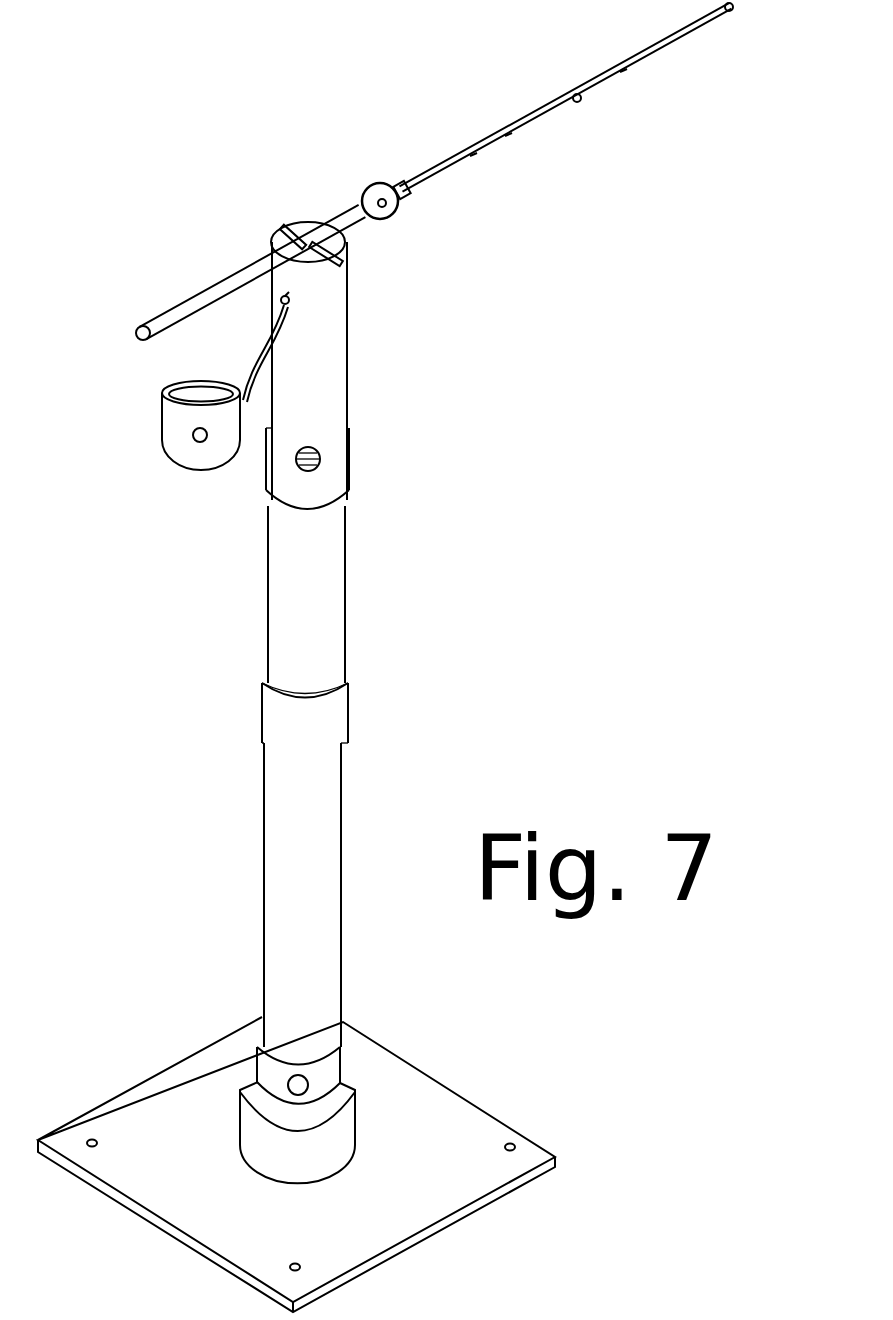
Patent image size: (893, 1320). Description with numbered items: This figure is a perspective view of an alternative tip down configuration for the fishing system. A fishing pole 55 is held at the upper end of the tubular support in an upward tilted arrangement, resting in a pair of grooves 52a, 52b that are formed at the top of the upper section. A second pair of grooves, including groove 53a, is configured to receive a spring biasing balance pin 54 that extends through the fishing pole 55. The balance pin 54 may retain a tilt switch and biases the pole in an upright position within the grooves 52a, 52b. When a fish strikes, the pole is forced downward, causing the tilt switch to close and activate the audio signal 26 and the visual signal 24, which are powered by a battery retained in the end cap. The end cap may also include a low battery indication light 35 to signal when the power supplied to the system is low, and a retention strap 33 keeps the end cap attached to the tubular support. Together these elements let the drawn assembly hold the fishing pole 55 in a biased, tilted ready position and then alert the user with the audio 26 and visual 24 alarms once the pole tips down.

The visual signal 24 is at (345, 592).
The audio signal 26 is at (322, 456).
The retention strap 33 is at (253, 352).
The low battery indication light 35 is at (200, 443).
The groove 52a is at (283, 277).
The groove 52b is at (343, 230).
The groove 53a is at (289, 226).
The spring biasing balance pin 54 is at (348, 252).
The fishing pole 55 is at (209, 278).